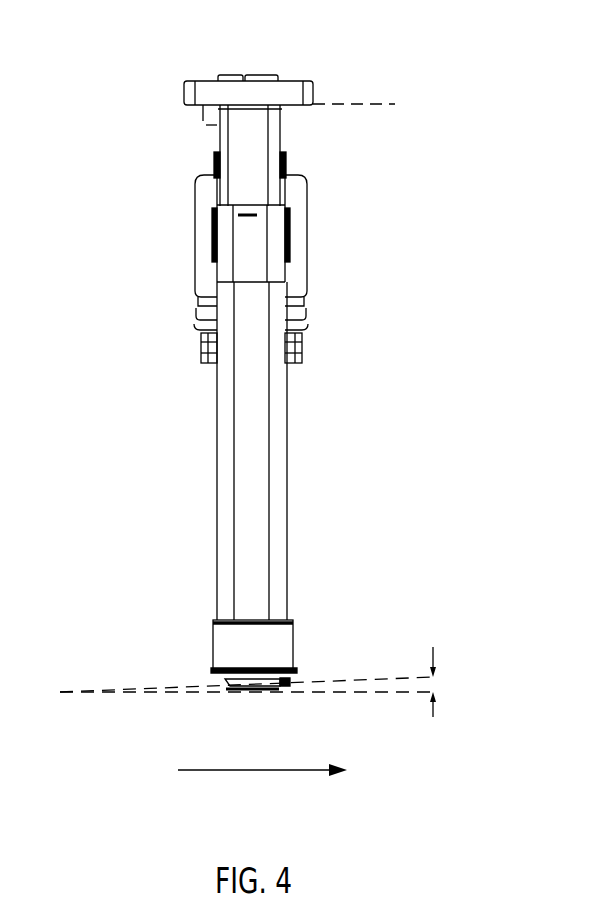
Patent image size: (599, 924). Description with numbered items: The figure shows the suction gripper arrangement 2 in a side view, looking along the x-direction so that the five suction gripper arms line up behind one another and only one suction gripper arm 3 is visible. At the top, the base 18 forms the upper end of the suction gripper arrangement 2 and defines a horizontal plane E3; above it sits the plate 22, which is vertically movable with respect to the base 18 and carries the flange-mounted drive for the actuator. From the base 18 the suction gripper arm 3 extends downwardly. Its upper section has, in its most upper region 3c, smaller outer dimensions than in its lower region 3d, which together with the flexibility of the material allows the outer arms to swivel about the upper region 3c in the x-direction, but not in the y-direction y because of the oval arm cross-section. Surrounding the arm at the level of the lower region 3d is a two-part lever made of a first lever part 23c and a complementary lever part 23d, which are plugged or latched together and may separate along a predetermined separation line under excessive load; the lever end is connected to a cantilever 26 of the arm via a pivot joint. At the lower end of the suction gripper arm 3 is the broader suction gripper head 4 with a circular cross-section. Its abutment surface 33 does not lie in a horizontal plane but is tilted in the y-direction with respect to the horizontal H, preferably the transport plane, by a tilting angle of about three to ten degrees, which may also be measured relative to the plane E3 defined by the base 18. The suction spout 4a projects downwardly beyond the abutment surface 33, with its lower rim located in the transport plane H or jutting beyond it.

The suction gripper arrangement 2 is at (142, 62).
The base 18 is at (292, 90).
The plate 22 is at (256, 70).
The plane defined by the base E3 is at (383, 104).
The upper region of the upper section 3c is at (253, 142).
The first lever part 23c is at (205, 210).
The complementary lever part 23d is at (300, 213).
The lower region of the upper section 3d is at (268, 262).
The cantilever 26 is at (302, 348).
The suction gripper arm 3 is at (262, 463).
The suction gripper head 4 is at (283, 645).
The suction spout 4a is at (253, 692).
The abutment surface 33 is at (288, 688).
The horizontal H is at (393, 693).
The y-direction y is at (270, 771).